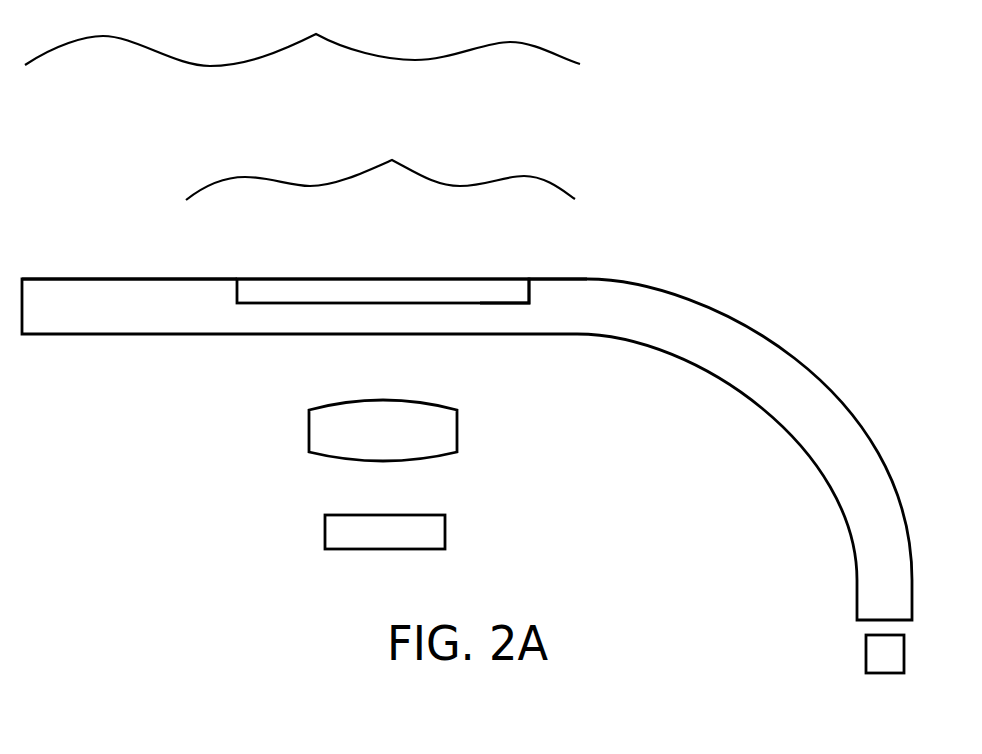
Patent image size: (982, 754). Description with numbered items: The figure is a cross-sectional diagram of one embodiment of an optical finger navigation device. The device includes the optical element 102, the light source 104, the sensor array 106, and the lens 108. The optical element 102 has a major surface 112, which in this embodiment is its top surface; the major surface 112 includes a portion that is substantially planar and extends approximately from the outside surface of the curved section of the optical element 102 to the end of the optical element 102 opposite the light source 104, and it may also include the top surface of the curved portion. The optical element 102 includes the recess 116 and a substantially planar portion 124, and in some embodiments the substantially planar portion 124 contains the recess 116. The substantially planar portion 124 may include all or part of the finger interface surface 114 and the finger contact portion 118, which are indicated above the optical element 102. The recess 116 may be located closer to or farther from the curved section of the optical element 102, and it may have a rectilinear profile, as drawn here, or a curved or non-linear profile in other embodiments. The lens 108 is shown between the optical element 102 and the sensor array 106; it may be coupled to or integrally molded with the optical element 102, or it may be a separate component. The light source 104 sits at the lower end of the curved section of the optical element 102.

The optical element 102 is at (756, 404).
The light source 104 is at (866, 660).
The sensor array 106 is at (325, 535).
The lens 108 is at (457, 432).
The major surface 112 is at (122, 276).
The finger interface surface 114 is at (486, 300).
The recess 116 is at (258, 286).
The finger contact portion 118 is at (380, 168).
The substantially planar portion 124 is at (302, 37).